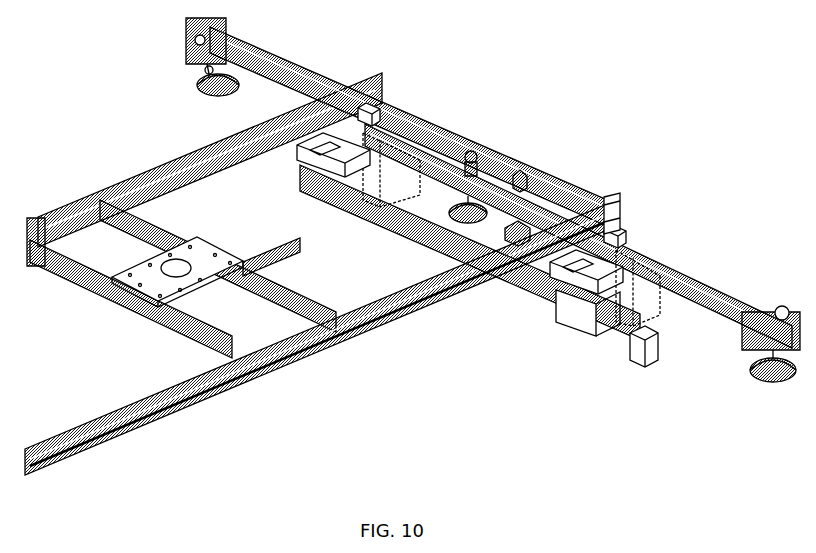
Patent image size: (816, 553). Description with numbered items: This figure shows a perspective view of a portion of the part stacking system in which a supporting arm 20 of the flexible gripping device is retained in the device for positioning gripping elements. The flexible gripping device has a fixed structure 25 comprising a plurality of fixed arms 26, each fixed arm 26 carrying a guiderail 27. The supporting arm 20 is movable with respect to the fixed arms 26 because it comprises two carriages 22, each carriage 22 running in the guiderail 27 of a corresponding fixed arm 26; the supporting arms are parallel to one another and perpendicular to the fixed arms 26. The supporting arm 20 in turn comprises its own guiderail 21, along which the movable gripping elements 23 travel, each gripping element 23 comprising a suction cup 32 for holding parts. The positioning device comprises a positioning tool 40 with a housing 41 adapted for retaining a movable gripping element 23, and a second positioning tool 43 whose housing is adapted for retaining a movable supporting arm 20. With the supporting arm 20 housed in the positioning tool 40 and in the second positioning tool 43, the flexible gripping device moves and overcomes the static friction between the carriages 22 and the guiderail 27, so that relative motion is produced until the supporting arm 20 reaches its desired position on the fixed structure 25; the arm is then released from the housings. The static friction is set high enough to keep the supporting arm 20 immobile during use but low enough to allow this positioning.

The supporting arm 20 is at (700, 287).
The guiderail 21 is at (270, 84).
The carriage 22 is at (368, 113).
The gripping element 23 is at (195, 71).
The fixed structure 25 is at (68, 284).
The fixed arm 26 is at (613, 200).
The guiderail 27 is at (413, 313).
The suction cup 32 is at (203, 84).
The positioning tool 40 is at (449, 250).
The housing 41 is at (335, 158).
The second positioning tool 43 is at (647, 317).